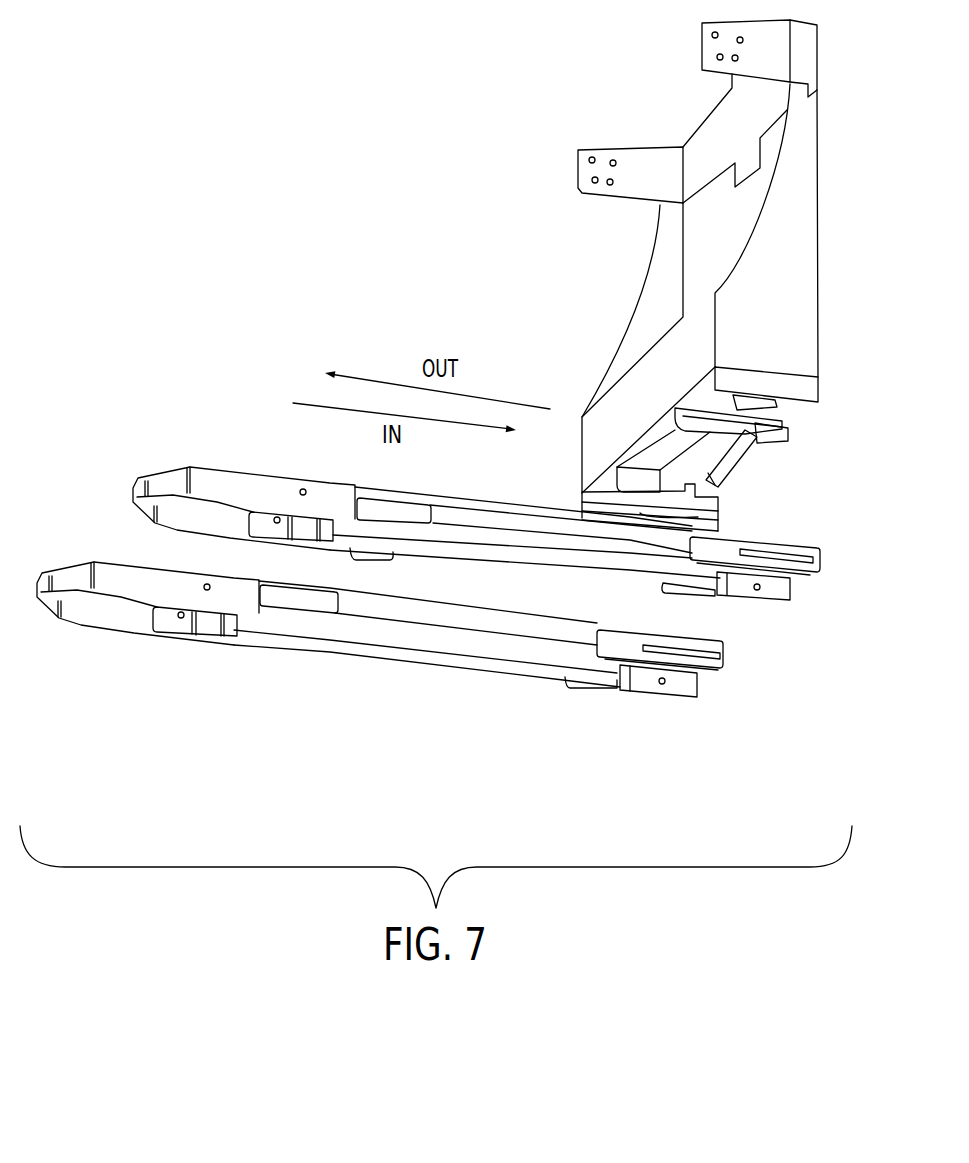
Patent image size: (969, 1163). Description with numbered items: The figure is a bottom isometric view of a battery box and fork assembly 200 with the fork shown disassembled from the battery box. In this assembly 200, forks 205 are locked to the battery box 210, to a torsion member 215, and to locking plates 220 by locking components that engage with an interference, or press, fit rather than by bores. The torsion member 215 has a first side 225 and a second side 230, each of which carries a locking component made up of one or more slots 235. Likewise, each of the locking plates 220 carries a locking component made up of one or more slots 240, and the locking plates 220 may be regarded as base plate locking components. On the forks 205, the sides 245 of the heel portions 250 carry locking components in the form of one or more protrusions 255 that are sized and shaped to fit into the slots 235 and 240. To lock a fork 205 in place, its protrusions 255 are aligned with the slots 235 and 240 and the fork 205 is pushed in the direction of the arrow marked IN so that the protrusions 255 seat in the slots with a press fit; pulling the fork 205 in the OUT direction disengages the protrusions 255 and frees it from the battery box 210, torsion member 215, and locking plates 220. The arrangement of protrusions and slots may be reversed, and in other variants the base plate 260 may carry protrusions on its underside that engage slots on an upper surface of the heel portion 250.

The battery box and fork assembly 200 is at (420, 100).
The forks 205 is at (390, 603).
The battery box 210 is at (797, 217).
The torsion member 215 is at (751, 469).
The locking plates 220 is at (808, 391).
The first side 225 is at (721, 493).
The second side 230 is at (772, 434).
The slots 235 is at (686, 411).
The slots 240 is at (690, 515).
The sides 245 is at (708, 641).
The heel portions 250 is at (665, 618).
The protrusions 255 is at (814, 576).
The base plate 260 is at (645, 443).